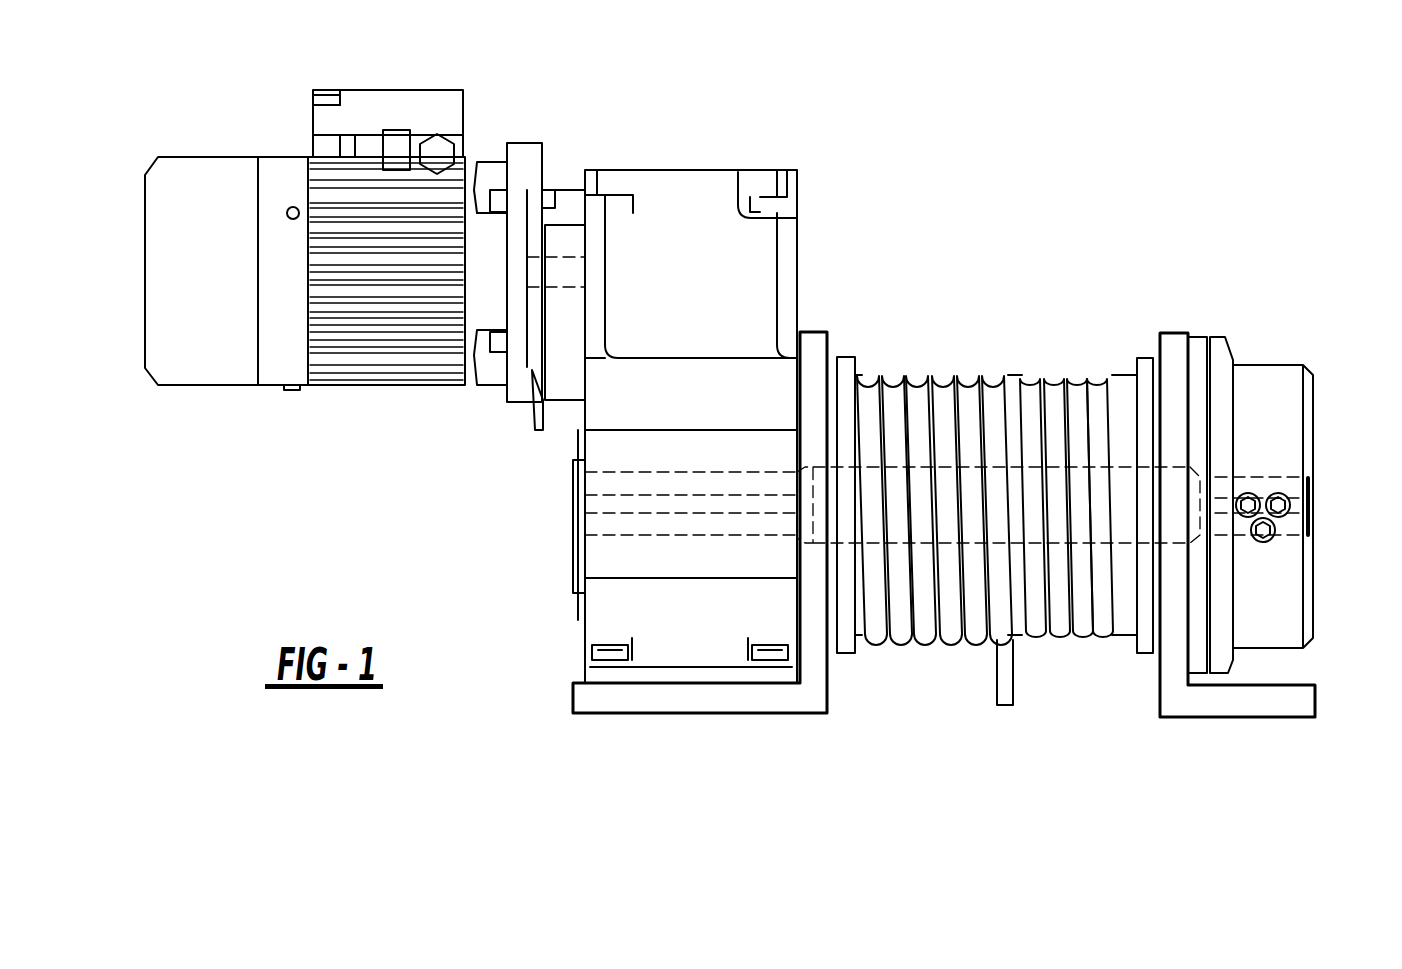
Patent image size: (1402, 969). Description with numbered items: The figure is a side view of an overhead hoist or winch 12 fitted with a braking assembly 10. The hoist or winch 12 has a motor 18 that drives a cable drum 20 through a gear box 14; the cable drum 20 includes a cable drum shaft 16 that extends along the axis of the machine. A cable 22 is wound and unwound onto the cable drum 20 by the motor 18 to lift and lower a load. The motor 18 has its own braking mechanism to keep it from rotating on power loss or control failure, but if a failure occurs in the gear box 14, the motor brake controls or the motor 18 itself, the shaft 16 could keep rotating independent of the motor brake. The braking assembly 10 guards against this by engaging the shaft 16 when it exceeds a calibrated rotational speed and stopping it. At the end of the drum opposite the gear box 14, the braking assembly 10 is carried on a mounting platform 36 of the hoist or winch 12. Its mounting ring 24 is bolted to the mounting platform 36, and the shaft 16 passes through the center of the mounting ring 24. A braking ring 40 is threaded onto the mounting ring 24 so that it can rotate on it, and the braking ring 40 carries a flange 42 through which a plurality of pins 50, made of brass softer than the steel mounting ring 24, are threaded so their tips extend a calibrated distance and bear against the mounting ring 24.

The braking assembly 10 is at (773, 421).
The hoist or winch 12 is at (588, 368).
The gear box 14 is at (698, 168).
The cable drum shaft 16 is at (1278, 472).
The motor 18 is at (282, 390).
The cable drum 20 is at (1075, 365).
The cable 22 is at (1000, 678).
The mounting ring 24 is at (1197, 335).
The mounting platform 36 is at (1245, 703).
The braking ring 40 is at (1270, 360).
The flange 42 is at (1220, 432).
The pins 50 is at (1230, 350).